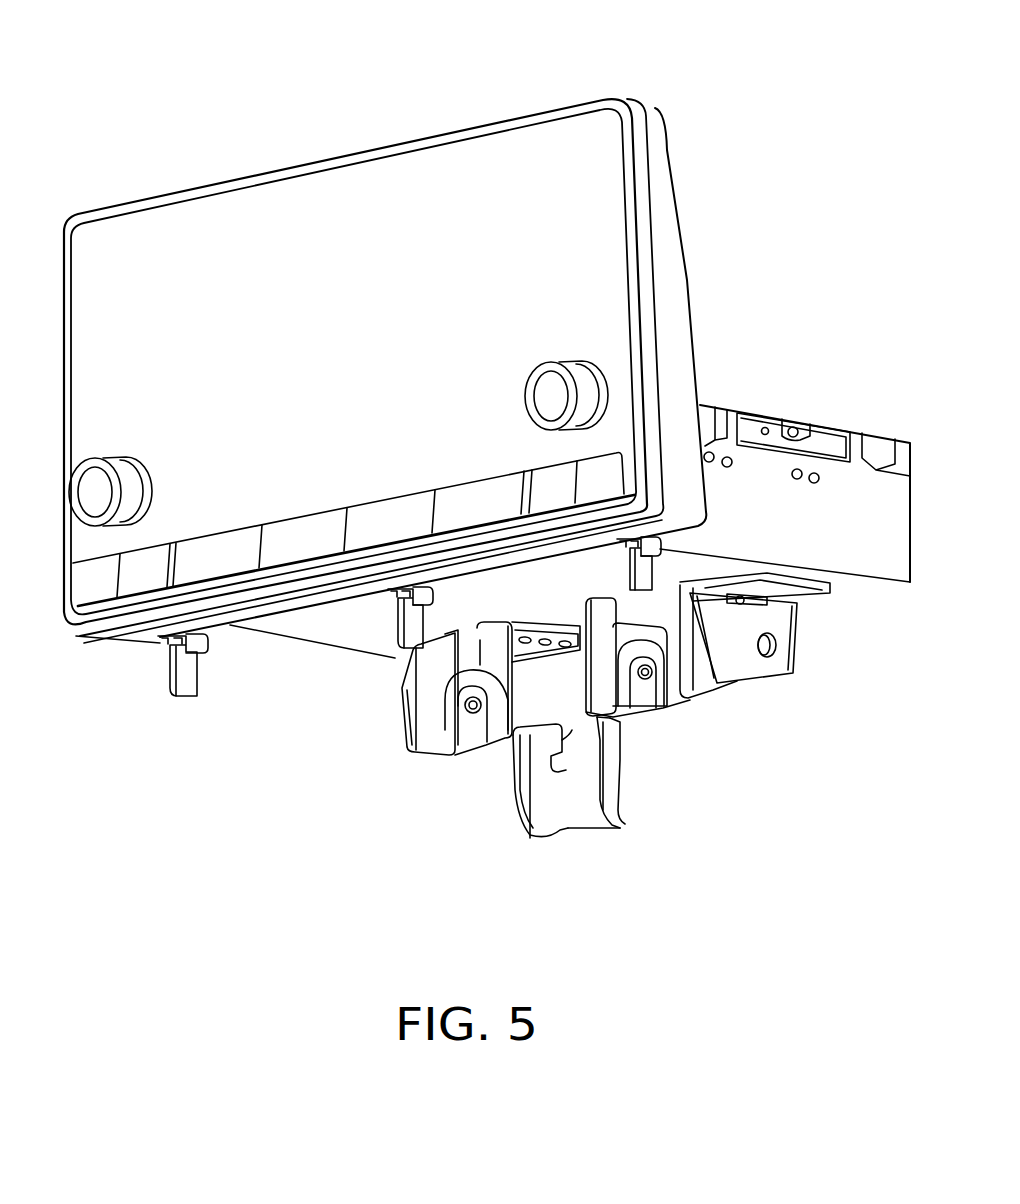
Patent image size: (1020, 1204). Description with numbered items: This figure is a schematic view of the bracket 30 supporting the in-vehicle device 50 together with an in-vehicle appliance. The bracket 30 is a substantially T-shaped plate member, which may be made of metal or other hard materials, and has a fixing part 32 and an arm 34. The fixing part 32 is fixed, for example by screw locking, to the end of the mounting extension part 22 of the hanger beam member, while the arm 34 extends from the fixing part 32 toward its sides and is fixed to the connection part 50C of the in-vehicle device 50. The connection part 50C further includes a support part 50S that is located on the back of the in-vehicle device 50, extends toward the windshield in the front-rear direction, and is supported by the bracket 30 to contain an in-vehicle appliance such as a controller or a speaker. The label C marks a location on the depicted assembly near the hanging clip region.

The in-vehicle device 50 is at (468, 182).
The connection part 50C is at (430, 668).
The support part 50S is at (843, 545).
The bracket 30 is at (600, 738).
The fixing part 32 is at (562, 741).
The arm 34 is at (782, 665).
The mounting extension part 22 is at (610, 830).
The gap C is at (540, 760).